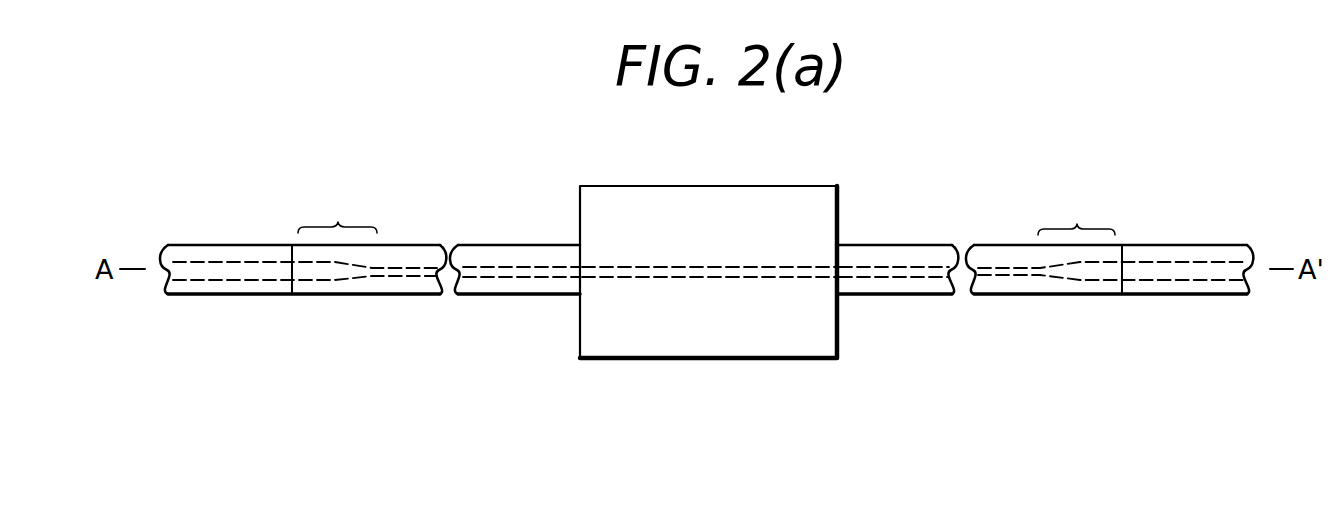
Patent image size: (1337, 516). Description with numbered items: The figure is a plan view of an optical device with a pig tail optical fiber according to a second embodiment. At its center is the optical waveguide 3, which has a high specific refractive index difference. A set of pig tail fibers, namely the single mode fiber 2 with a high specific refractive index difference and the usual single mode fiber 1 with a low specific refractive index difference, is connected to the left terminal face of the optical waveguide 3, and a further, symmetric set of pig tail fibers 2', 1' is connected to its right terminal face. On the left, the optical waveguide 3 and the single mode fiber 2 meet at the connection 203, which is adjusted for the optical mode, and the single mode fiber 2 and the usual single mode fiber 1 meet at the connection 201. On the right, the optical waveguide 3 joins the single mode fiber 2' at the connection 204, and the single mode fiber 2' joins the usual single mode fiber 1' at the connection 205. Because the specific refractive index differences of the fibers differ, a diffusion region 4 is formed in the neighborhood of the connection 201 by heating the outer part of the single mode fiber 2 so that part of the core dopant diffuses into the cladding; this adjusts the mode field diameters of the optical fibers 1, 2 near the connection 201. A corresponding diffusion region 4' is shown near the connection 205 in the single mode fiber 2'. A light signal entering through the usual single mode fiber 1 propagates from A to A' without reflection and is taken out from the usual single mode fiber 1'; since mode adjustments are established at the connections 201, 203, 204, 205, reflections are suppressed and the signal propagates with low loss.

The usual single mode fiber 1 is at (303, 304).
The usual single mode fiber 1' is at (1109, 304).
The single mode fiber with a high specific refractive index difference 2 is at (515, 305).
The single mode fiber with a high specific refractive index difference 2' is at (897, 305).
The optical waveguide 3 is at (783, 185).
The diffusion region 4 is at (337, 211).
The diffusion region 4' is at (1076, 212).
The connection 201 is at (297, 247).
The connection 203 is at (577, 257).
The connection 204 is at (840, 257).
The connection 205 is at (1127, 252).